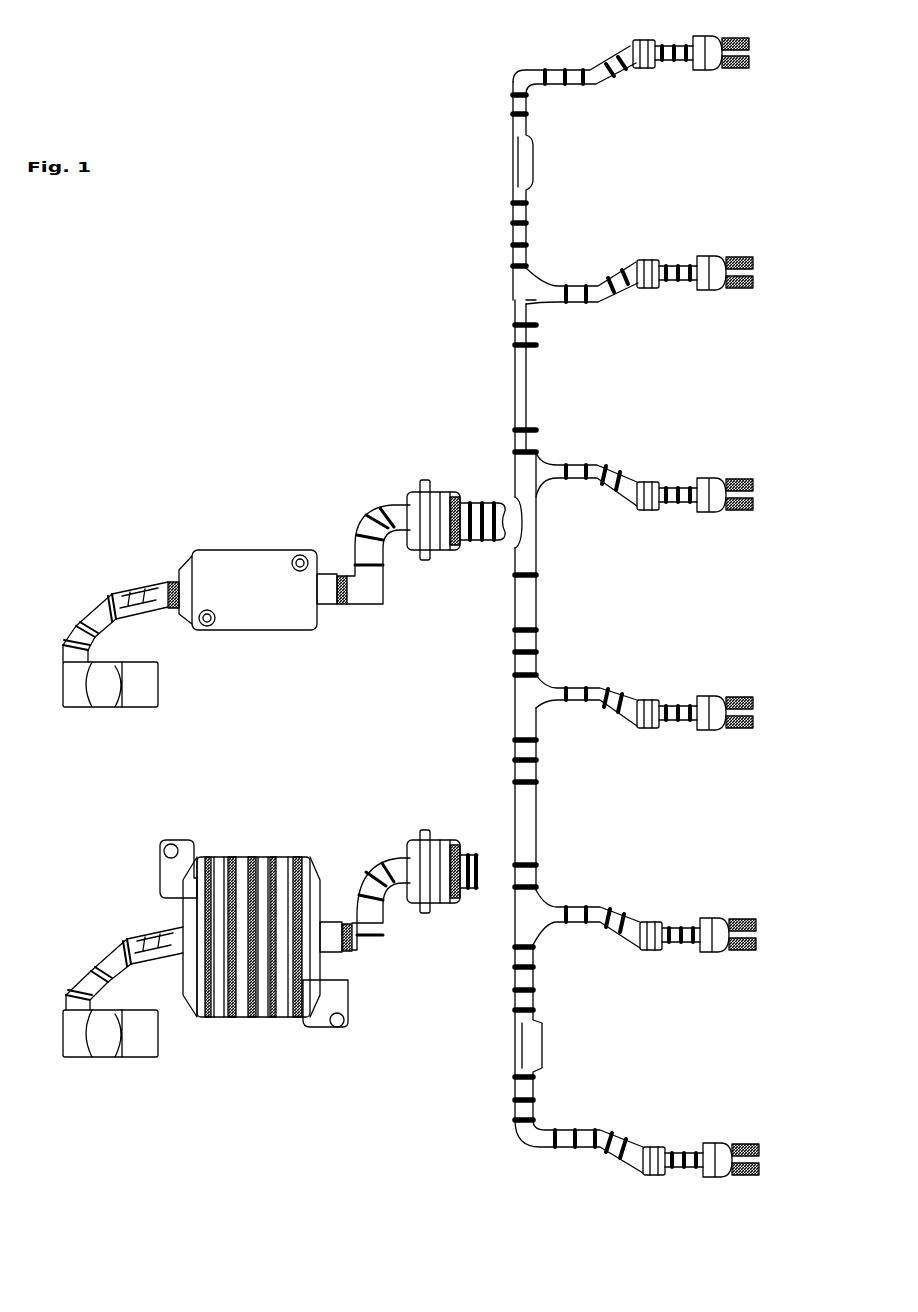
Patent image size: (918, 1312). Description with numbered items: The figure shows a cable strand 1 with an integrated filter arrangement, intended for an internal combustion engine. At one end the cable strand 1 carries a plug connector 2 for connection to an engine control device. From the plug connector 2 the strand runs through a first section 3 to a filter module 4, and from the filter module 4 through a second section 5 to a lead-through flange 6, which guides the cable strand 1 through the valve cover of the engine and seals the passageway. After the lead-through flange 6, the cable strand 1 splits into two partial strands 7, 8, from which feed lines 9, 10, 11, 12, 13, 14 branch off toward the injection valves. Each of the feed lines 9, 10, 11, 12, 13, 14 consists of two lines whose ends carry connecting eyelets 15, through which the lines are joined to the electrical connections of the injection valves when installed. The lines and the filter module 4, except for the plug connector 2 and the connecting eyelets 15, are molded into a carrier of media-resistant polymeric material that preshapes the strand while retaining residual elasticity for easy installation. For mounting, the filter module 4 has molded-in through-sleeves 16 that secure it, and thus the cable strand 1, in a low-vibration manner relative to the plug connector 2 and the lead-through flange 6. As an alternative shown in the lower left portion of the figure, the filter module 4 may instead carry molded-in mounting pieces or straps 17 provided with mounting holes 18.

The cable strand 1 is at (372, 326).
The plug connector 2 is at (108, 690).
The first section 3 is at (102, 602).
The filter module 4 is at (278, 618).
The second section 5 is at (375, 590).
The lead-through flange 6 is at (415, 490).
The partial strand 7 is at (518, 372).
The partial strand 8 is at (523, 693).
The feed line 9 is at (590, 87).
The feed line 10 is at (606, 298).
The feed line 11 is at (605, 502).
The feed line 12 is at (617, 720).
The feed line 13 is at (608, 933).
The feed line 14 is at (613, 1153).
The connecting eyelets 15 is at (750, 60).
The through-sleeves 16 is at (208, 628).
The mounting pieces or straps 17 is at (160, 886).
The mounting holes 18 is at (298, 556).